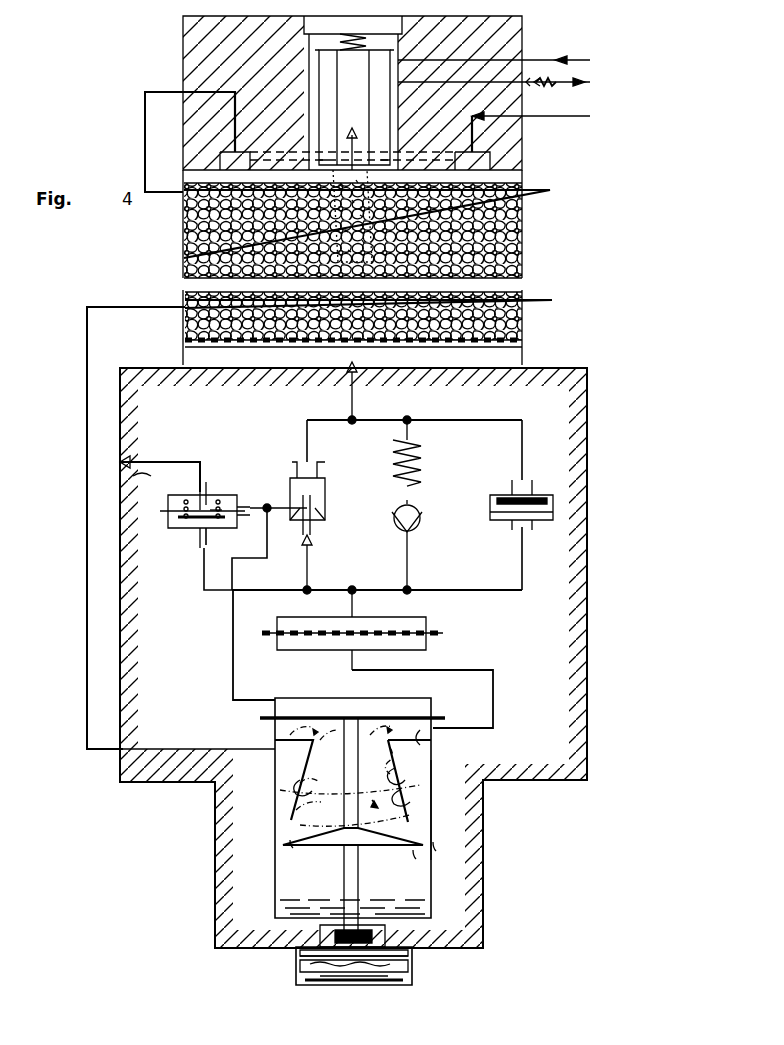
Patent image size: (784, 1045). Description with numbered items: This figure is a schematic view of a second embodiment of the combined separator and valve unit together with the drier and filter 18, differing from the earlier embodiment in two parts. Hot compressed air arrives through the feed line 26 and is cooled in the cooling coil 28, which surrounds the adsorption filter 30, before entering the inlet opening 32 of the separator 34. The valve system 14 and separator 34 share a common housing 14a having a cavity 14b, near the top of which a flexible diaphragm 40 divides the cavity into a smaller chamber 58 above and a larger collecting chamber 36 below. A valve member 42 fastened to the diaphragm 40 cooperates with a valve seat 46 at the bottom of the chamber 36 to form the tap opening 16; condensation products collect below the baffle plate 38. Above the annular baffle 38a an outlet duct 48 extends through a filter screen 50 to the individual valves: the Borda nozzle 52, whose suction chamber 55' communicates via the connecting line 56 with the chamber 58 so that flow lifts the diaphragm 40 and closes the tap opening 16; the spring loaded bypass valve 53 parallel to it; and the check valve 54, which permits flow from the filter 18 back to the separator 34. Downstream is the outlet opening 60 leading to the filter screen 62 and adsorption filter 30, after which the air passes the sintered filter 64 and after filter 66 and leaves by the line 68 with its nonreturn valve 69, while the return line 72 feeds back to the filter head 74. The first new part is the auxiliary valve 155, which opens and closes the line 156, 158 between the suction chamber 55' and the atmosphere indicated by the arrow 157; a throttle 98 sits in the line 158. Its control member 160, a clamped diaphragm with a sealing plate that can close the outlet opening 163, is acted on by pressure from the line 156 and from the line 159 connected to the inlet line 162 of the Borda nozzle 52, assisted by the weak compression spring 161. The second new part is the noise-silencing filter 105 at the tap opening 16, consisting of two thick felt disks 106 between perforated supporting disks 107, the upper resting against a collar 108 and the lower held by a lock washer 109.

The filter head 74 is at (196, 42).
The drier and filter 18 is at (178, 70).
The after filter 66 is at (328, 85).
The return line 72 is at (556, 58).
The line 68 is at (572, 90).
The nonreturn valve 69 is at (542, 88).
The feed line 26 is at (566, 118).
The adsorption filter 30 is at (183, 248).
The sintered filter 64 is at (335, 212).
The cooling coil 28 is at (548, 192).
The filter screen 62 is at (525, 330).
The outlet opening 60 is at (360, 356).
The inlet opening 32 is at (100, 752).
The valve system 14 is at (592, 410).
The common housing 14a is at (588, 470).
The cavity 14b is at (433, 800).
The throttle 98 is at (140, 459).
The arrow 157 is at (118, 461).
The weak compression spring 161 is at (187, 495).
The auxiliary valve 155 is at (165, 506).
The line 158 is at (210, 490).
The outlet opening 163 is at (207, 505).
The control member 160 is at (196, 528).
The line 159 is at (200, 565).
The line 156 is at (267, 505).
The Borda nozzle 52 is at (317, 526).
The suction chamber 55' is at (346, 485).
The inlet line 162 is at (305, 568).
The spring loaded bypass valve 53 is at (421, 535).
The check valve 54 is at (538, 527).
The connecting line 56 is at (233, 642).
The filter screen 50 is at (420, 634).
The outlet duct 48 is at (495, 690).
The separator 34 is at (268, 815).
The chamber 58 is at (315, 700).
The annular baffle 38a is at (422, 730).
The flexible diaphragm 40 is at (432, 728).
The valve member 42 is at (360, 875).
The baffle plate 38 is at (433, 835).
The collecting chamber 36 is at (297, 892).
The valve seat 46 is at (360, 930).
The tap opening 16 is at (450, 942).
The noise-silencing filter 105 is at (300, 977).
The collar 108 is at (320, 948).
The felt disks 106 is at (395, 958).
The perforated supporting disks 107 is at (335, 976).
The lock washer 109 is at (376, 982).